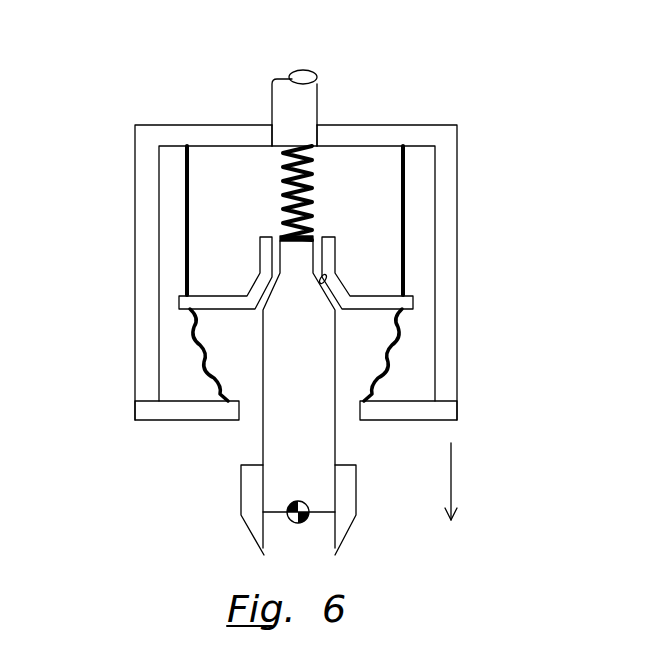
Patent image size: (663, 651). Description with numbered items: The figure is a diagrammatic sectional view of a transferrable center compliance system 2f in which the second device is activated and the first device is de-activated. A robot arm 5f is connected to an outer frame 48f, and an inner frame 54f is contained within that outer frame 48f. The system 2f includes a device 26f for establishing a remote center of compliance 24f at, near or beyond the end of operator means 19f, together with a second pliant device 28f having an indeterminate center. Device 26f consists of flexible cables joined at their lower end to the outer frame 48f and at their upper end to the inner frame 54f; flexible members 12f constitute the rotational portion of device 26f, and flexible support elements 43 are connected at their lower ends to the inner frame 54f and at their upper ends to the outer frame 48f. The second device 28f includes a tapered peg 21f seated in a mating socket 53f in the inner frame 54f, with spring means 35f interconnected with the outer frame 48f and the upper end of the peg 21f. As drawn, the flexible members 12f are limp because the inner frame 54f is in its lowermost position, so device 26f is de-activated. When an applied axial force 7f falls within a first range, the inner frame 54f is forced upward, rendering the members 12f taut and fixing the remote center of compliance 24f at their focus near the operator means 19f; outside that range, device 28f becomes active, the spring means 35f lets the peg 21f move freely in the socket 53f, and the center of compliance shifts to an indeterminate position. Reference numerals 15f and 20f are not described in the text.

The transferrable center compliance system 2f is at (428, 65).
The robot arm 5f is at (319, 90).
The applied axial force 7f is at (452, 470).
The flexible members 12f is at (198, 342).
The spring guide 15f is at (283, 168).
The operator means 19f is at (247, 435).
The gripping jaw 20f is at (362, 470).
The tapered peg 21f is at (335, 428).
The remote center of compliance 24f is at (298, 523).
The device for establishing a remote center of compliance 26f is at (192, 380).
The second pliant device 28f is at (265, 208).
The spring means 35f is at (312, 203).
The flexible support elements 43 is at (187, 222).
The outer frame 48f is at (457, 200).
The mating socket 53f is at (326, 280).
The inner frame 54f is at (250, 287).